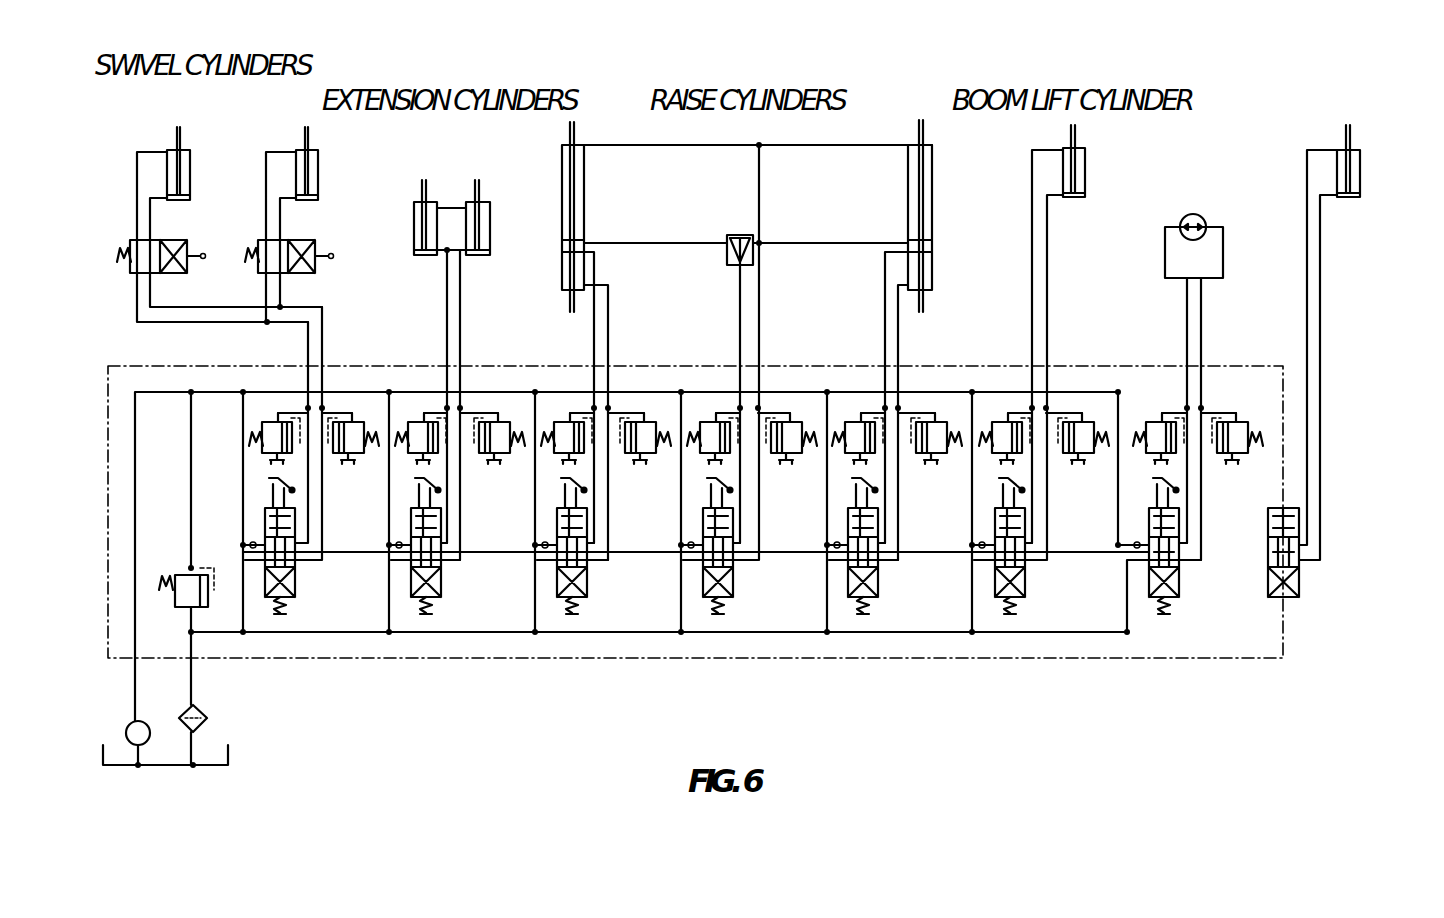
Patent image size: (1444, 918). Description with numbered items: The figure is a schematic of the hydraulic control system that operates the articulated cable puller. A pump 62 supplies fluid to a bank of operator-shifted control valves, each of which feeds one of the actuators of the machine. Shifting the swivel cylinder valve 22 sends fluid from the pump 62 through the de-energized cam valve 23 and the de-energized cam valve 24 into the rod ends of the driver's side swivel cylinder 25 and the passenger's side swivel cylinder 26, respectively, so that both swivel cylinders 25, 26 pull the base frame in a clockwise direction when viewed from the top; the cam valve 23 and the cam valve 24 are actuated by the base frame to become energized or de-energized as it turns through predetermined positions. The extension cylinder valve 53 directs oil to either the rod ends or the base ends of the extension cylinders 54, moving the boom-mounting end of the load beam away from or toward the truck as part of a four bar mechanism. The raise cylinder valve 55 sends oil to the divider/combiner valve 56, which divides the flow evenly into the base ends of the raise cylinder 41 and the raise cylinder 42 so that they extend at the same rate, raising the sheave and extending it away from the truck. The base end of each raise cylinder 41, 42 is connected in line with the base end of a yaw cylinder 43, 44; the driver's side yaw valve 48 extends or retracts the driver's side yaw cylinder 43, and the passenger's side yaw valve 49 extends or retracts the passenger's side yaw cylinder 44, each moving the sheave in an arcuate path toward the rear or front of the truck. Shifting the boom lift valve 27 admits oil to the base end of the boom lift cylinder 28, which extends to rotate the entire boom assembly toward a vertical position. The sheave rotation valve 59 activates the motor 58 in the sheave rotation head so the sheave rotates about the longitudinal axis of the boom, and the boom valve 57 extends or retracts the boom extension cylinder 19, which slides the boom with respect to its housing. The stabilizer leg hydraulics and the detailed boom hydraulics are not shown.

The boom extension cylinder 19 is at (1360, 170).
The swivel cylinder valve 22 is at (297, 606).
The cam valve 23 is at (131, 272).
The cam valve 24 is at (316, 272).
The driver's side swivel cylinder 25 is at (172, 147).
The passenger's side swivel cylinder 26 is at (318, 160).
The boom lift valve 27 is at (1027, 606).
The boom lift cylinder 28 is at (1075, 198).
The raise cylinder 41 is at (585, 193).
The raise cylinder 42 is at (935, 195).
The driver's side yaw cylinder 43 is at (562, 285).
The passenger's side yaw cylinder 44 is at (935, 275).
The driver's side yaw valve 48 is at (590, 606).
The passenger's side yaw valve 49 is at (880, 606).
The extension cylinder valve 53 is at (443, 606).
The extension cylinders 54 is at (423, 257).
The raise cylinder valve 55 is at (736, 606).
The divider/combiner valve 56 is at (727, 250).
The boom valve 57 is at (1300, 598).
The motor 58 is at (1200, 212).
The sheave rotation valve 59 is at (1167, 614).
The pump 62 is at (128, 724).